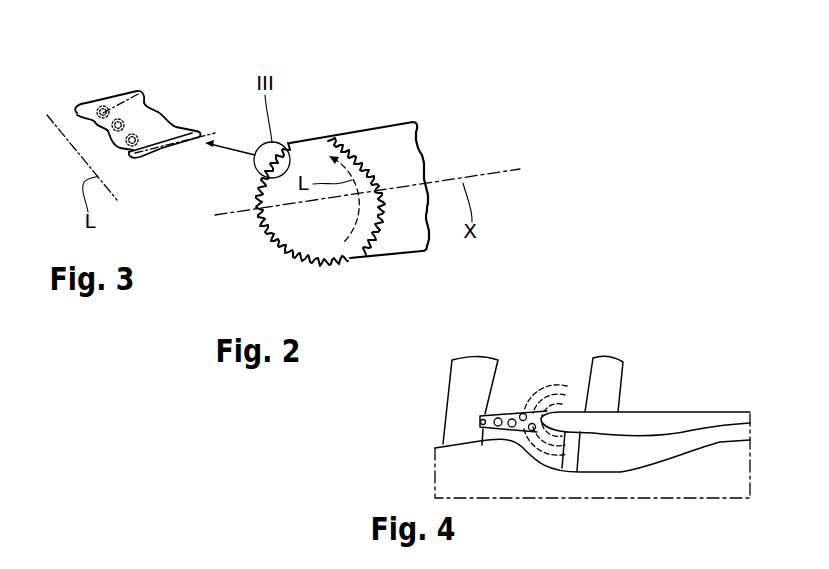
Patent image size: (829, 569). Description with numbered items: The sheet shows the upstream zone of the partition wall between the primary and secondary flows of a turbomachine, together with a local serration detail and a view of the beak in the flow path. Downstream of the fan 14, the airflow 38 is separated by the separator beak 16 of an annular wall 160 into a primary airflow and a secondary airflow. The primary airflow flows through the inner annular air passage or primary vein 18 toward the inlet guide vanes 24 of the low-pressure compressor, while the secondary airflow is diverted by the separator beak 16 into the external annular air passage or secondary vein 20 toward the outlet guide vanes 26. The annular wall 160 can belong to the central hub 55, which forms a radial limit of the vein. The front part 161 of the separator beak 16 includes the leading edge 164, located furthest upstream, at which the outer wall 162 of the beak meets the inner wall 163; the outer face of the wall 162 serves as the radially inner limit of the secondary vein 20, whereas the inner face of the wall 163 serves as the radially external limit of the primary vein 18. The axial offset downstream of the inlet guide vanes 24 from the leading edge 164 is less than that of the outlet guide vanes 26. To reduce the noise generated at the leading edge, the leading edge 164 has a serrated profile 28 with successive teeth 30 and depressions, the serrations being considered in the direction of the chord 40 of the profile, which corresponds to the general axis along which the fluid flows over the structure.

In FIG. 4, the fan 14 is at (462, 388).
In FIG. 3, the separator beak 16 is at (97, 91).
In FIG. 2, the separator beak 16 is at (370, 263).
In FIG. 4, the primary vein 18 is at (642, 454).
In FIG. 4, the secondary vein 20 is at (658, 409).
In FIG. 4, the inlet guide vanes 24 is at (580, 448).
In FIG. 4, the outlet guide vanes 26 is at (607, 377).
In FIG. 3, the serration profile 28 is at (104, 126).
In FIG. 2, the serration profile 28 is at (261, 212).
In FIG. 3, the teeth 30 is at (87, 108).
In FIG. 4, the airflow 38 is at (513, 408).
In FIG. 3, the chord 40 is at (186, 142).
In FIG. 2, the central hub 55 is at (433, 139).
In FIG. 4, the central hub 55 is at (673, 400).
In FIG. 3, the annular wall 160 is at (156, 118).
In FIG. 2, the annular wall 160 is at (352, 133).
In FIG. 4, the annular wall 160 is at (650, 425).
In FIG. 2, the front part 161 is at (377, 175).
In FIG. 3, the outer wall 162 is at (178, 128).
In FIG. 3, the inner wall 163 is at (152, 153).
In FIG. 3, the leading edge 164 is at (117, 152).
In FIG. 2, the leading edge 164 is at (291, 257).
In FIG. 4, the leading edge 164 is at (551, 400).